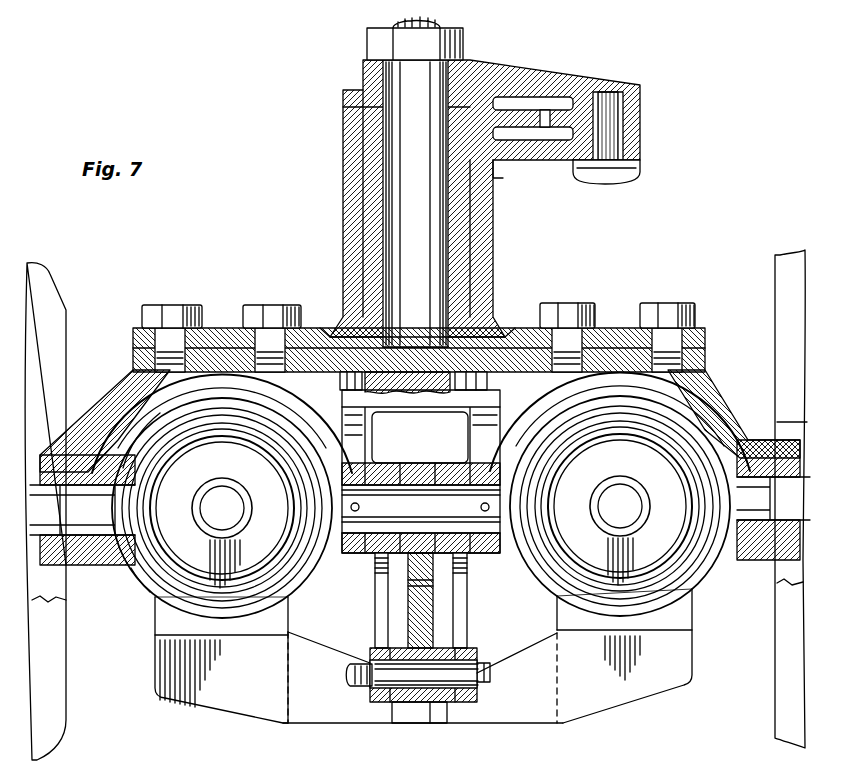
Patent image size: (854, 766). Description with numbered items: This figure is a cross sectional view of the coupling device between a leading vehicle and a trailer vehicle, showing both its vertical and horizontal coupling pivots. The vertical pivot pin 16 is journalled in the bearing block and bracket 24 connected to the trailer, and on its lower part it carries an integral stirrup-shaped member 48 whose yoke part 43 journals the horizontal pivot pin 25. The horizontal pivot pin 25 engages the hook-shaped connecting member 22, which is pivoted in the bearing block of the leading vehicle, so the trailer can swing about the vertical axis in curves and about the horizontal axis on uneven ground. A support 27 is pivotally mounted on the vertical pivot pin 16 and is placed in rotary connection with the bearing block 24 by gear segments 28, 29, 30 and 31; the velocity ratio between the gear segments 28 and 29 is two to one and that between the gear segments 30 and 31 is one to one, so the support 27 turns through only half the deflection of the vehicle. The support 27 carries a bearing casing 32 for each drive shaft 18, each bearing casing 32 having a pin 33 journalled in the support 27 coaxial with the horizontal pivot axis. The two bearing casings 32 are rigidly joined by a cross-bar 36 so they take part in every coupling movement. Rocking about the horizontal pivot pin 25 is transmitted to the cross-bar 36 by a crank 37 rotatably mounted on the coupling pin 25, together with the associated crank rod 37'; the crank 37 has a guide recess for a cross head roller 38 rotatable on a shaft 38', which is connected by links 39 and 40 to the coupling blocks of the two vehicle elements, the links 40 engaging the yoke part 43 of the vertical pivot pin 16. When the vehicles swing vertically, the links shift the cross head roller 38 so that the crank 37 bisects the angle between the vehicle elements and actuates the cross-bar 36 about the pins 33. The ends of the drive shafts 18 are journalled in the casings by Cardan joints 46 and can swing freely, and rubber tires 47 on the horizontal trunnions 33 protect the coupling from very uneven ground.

The vertical pivot pin 16 is at (430, 243).
The drive shaft 18 is at (421, 507).
The hook-shaped connecting member 22 is at (388, 475).
The bearing block and bracket 24 is at (480, 275).
The horizontal pivot pin 25 is at (356, 553).
The support 27 is at (310, 335).
The gear segment 28 is at (512, 110).
The gear segment 29 is at (558, 110).
The gear segment 30 is at (499, 167).
The gear segment 31 is at (560, 153).
The bearing casing 32 is at (152, 582).
The pin 33 is at (88, 502).
The cross-bar 36 is at (596, 708).
The crank 37 is at (421, 491).
The hub rod 37' is at (370, 600).
The cross head roller 38 is at (441, 657).
The shaft 38' is at (444, 678).
The link 39 is at (378, 611).
The link 40 is at (403, 702).
The yoke part 43 is at (482, 423).
The Cardan joint 46 is at (230, 567).
The rubber tire 47 is at (45, 622).
The stirrup-shaped member 48 is at (350, 392).